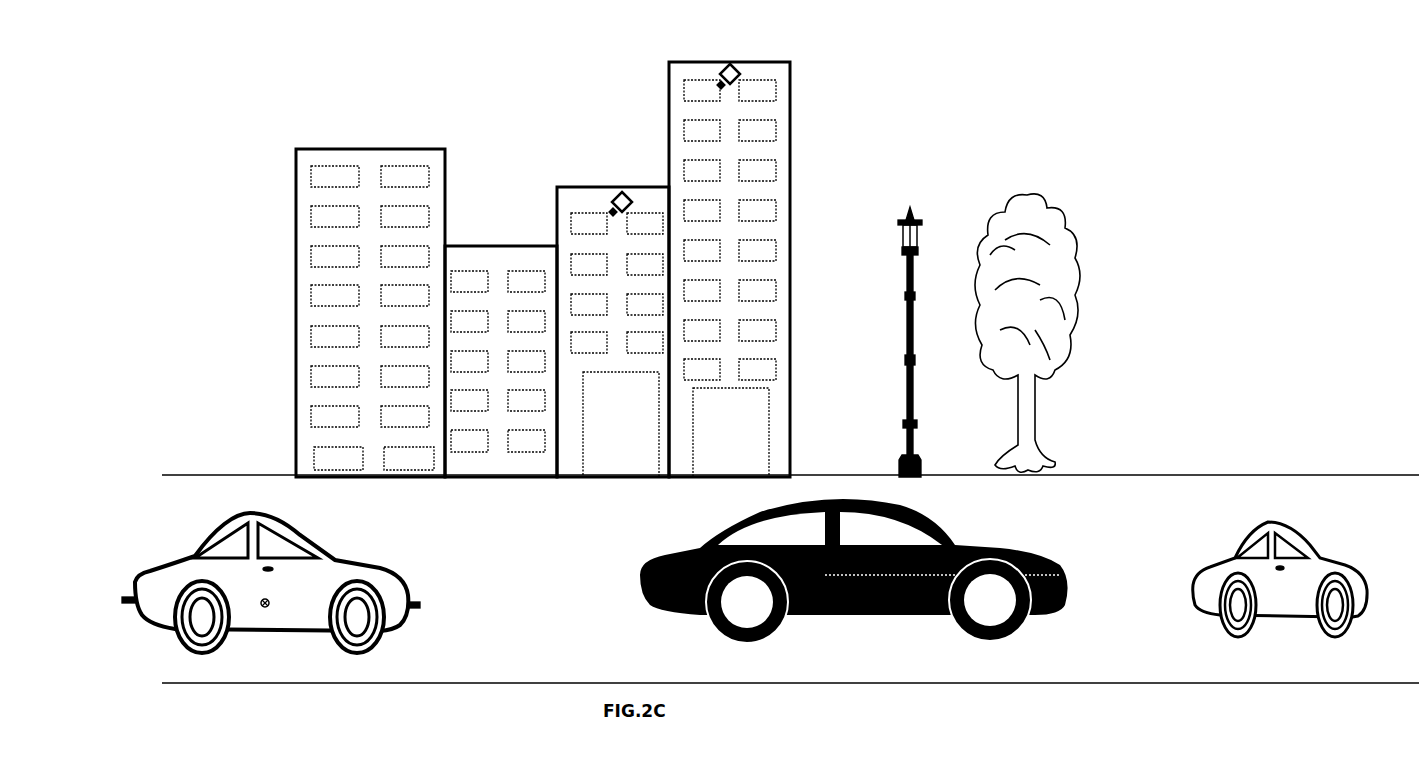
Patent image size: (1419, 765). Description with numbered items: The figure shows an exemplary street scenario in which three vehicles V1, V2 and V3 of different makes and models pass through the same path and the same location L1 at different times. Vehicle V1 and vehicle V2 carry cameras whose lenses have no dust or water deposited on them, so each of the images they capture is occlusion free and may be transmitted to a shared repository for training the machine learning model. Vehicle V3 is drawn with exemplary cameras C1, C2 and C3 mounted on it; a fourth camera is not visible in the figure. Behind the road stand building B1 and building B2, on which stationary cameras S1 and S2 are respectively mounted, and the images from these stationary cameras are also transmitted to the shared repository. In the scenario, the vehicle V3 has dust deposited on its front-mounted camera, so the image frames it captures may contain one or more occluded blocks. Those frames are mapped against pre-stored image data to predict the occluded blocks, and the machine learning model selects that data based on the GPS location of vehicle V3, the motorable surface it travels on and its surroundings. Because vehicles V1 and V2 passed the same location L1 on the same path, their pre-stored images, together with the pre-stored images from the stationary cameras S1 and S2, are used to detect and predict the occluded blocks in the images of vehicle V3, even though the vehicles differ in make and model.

The location L1 is at (184, 393).
The building B1 is at (613, 332).
The building B2 is at (729, 269).
The stationary camera S1 is at (617, 191).
The stationary camera S2 is at (727, 62).
The vehicle V1 is at (1258, 523).
The vehicle V2 is at (925, 524).
The vehicle V3 is at (273, 514).
The camera C1 is at (130, 596).
The camera C2 is at (268, 600).
The camera C3 is at (418, 601).